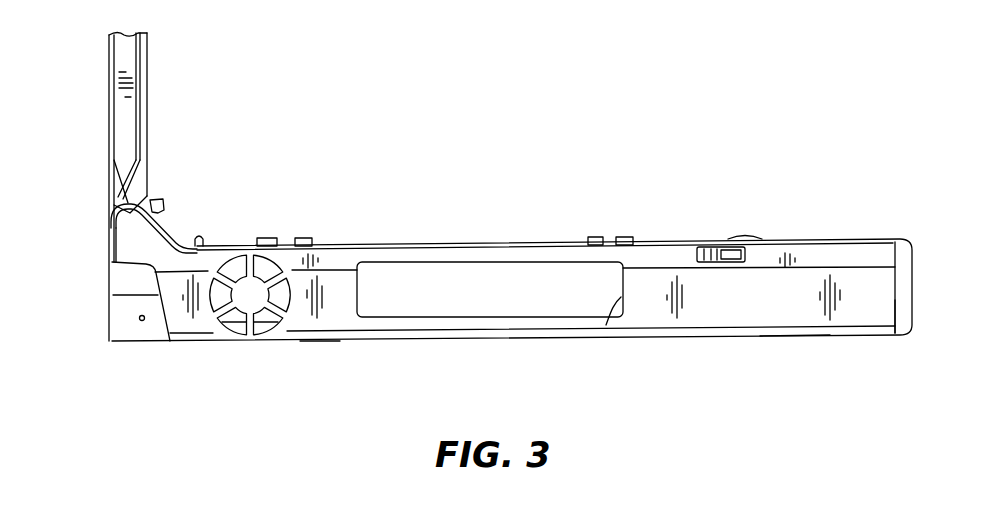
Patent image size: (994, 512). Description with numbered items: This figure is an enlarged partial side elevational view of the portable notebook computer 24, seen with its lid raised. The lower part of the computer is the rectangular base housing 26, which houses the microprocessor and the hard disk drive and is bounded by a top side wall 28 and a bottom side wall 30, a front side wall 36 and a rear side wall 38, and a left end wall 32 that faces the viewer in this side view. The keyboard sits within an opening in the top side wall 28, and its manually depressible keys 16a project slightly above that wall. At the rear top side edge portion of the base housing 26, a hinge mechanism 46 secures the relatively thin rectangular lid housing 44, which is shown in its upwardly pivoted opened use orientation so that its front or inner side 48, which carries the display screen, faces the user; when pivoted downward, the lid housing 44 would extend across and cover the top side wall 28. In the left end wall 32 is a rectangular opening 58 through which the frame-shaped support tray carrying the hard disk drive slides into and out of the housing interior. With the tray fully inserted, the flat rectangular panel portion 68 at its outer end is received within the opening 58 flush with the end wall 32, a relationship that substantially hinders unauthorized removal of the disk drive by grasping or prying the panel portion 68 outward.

The portable notebook computer 24 is at (488, 249).
The base housing 26 is at (780, 353).
The top side wall 28 is at (817, 238).
The bottom side wall 30 is at (327, 343).
The left end wall 32 is at (768, 312).
The front side wall 36 is at (911, 330).
The rear side wall 38 is at (111, 283).
The lid housing 44 is at (104, 78).
The hinge mechanism 46 is at (142, 239).
The front side of the lid housing 48 is at (149, 54).
The rectangular opening 58 is at (606, 325).
The panel portion 68 is at (494, 301).
The keys 16a is at (270, 237).